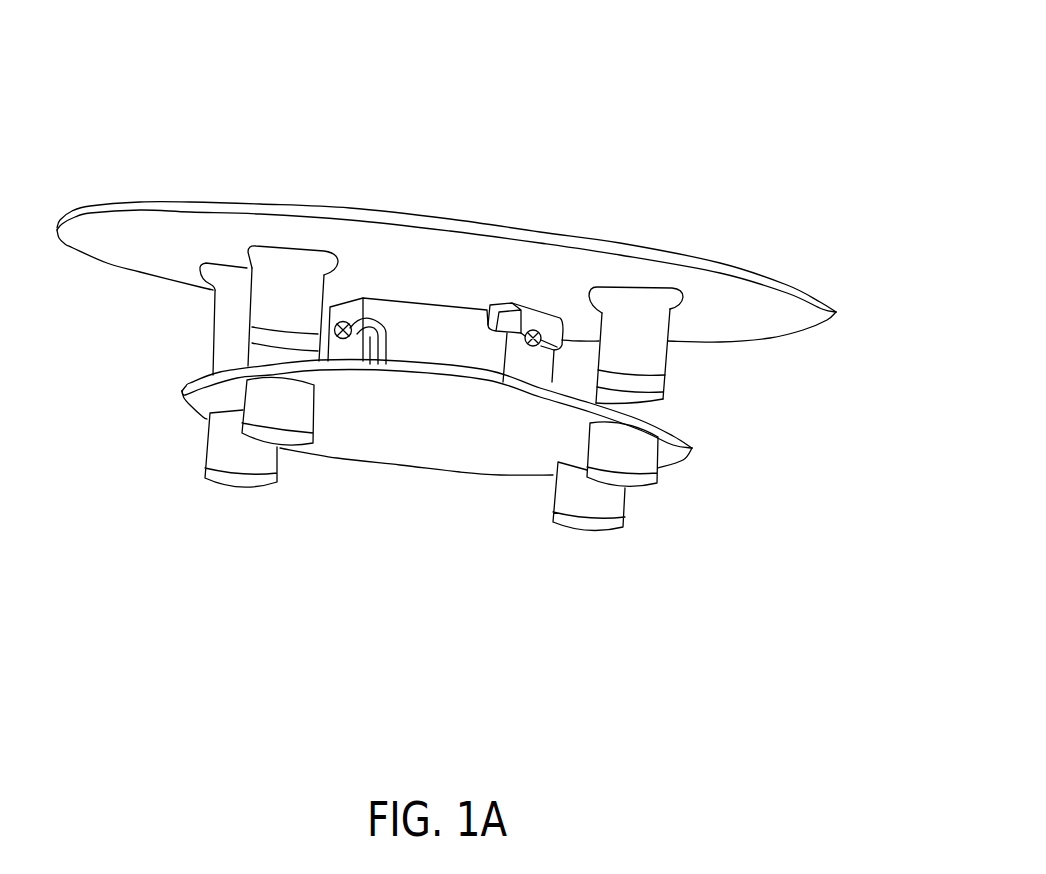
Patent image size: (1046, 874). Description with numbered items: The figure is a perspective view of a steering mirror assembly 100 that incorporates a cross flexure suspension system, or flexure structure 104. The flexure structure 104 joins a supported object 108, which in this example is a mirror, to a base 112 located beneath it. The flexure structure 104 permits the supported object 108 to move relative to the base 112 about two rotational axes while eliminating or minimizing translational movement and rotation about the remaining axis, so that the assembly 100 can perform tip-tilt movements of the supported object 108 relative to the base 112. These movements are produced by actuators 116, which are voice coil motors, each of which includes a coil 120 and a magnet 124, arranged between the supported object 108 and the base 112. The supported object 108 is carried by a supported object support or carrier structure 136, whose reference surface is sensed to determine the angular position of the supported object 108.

The assembly 100 is at (633, 113).
The flexure structure 104 is at (444, 368).
The supported object 108 is at (716, 263).
The base 112 is at (686, 451).
The actuators 116 is at (203, 347).
The coil 120 is at (221, 447).
The magnet 124 is at (278, 257).
The carrier structure 136 is at (810, 318).